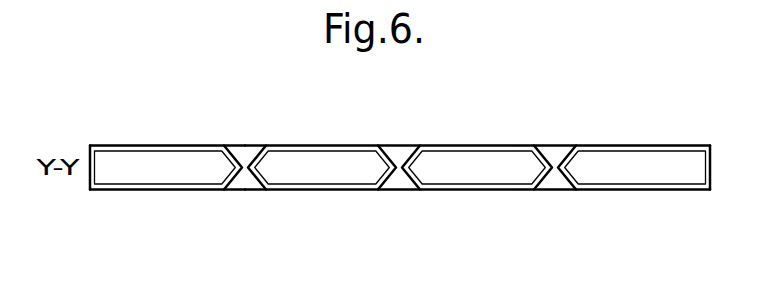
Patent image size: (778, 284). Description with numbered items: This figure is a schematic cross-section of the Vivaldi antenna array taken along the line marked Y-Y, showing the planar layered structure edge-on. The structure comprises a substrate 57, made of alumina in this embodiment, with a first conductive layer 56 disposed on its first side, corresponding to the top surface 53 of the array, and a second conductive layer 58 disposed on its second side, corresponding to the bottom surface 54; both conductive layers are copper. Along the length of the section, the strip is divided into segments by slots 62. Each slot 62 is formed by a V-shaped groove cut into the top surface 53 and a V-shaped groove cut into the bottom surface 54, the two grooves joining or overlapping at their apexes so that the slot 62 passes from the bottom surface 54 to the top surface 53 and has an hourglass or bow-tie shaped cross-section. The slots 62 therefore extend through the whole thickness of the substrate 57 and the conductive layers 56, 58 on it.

The top surface 53 is at (686, 144).
The bottom surface 54 is at (665, 192).
The first conductive layer 56 is at (138, 143).
The substrate 57 is at (117, 178).
The second conductive layer 58 is at (150, 192).
The slot 62 is at (245, 163).